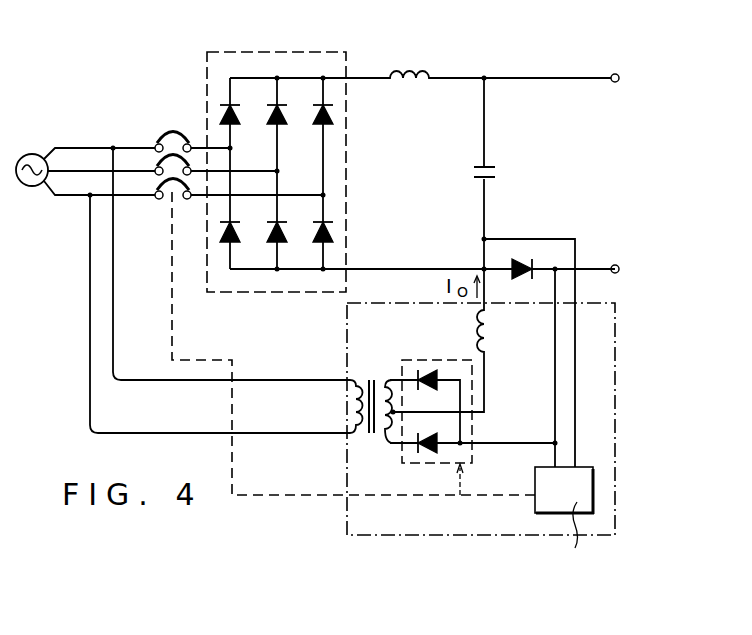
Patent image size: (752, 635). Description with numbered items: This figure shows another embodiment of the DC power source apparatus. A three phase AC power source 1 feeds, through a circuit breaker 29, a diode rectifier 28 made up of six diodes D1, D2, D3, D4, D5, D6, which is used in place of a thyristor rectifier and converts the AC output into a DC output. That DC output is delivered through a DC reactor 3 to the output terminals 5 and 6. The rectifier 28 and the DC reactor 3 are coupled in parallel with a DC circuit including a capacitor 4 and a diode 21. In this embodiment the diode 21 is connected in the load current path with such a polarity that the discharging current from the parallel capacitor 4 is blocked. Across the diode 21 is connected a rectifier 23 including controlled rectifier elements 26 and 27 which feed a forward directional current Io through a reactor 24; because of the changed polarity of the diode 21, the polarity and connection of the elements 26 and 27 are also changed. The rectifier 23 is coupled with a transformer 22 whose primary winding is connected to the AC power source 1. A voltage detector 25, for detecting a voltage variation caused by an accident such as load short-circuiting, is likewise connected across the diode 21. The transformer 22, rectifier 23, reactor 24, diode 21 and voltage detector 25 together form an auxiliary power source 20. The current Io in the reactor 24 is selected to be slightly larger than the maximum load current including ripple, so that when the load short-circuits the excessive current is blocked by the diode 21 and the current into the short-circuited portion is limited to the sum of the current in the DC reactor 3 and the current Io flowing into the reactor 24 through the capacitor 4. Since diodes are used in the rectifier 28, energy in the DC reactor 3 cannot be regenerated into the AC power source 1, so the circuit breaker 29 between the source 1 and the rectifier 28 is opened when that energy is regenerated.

The AC power source 1 is at (31, 187).
The circuit breaker 29 is at (173, 131).
The diode rectifier 28 is at (350, 156).
The diode D1 is at (233, 122).
The diode D2 is at (280, 122).
The diode D3 is at (315, 112).
The diode D4 is at (233, 240).
The diode D5 is at (280, 240).
The diode D6 is at (315, 228).
The DC reactor 3 is at (410, 86).
The capacitor 4 is at (498, 173).
The output terminal 5 is at (615, 83).
The output terminal 6 is at (615, 264).
The diode 21 is at (521, 259).
The reactor 24 is at (492, 340).
The transformer 22 is at (371, 379).
The rectifier 23 is at (472, 413).
The controlled rectifier element 26 is at (426, 373).
The controlled rectifier element 27 is at (427, 455).
The voltage detector 25 is at (541, 498).
The auxiliary power source 20 is at (346, 506).